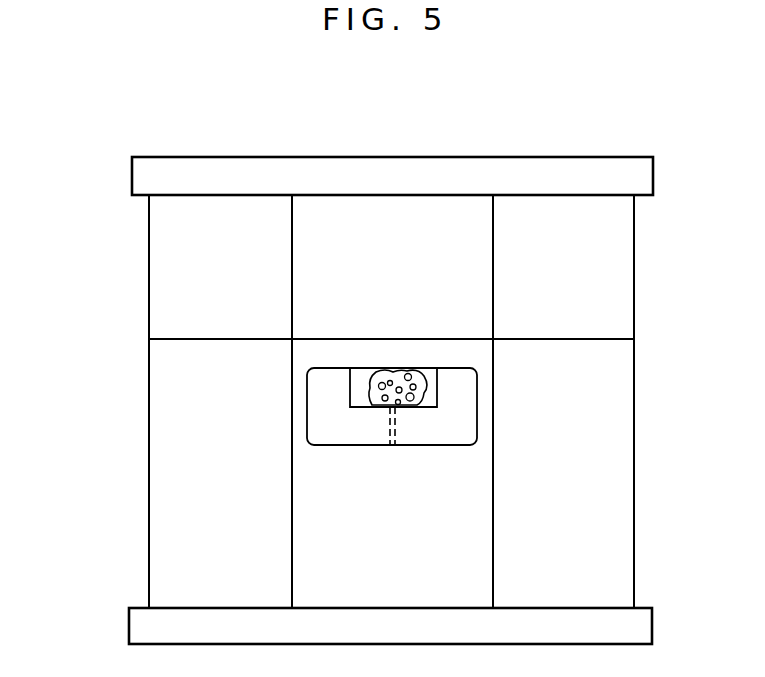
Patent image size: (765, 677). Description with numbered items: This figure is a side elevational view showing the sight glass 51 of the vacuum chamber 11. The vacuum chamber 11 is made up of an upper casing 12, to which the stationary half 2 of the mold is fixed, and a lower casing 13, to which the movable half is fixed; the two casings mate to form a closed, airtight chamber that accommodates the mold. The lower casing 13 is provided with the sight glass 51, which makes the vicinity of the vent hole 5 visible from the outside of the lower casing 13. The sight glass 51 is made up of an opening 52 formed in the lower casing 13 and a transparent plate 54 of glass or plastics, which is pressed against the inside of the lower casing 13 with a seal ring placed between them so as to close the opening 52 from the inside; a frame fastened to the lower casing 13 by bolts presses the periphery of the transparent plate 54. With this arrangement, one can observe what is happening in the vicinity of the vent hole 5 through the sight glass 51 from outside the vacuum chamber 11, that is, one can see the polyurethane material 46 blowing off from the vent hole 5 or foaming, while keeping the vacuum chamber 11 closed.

The vacuum chamber 11 is at (85, 288).
The upper casing 12 is at (160, 305).
The lower casing 13 is at (163, 378).
The stationary half 2 is at (467, 414).
The gel material 46 is at (402, 379).
The sight glass 51 is at (337, 388).
The opening 52 is at (335, 433).
The transparent plate 54 is at (375, 433).
The vent hole 5 is at (396, 422).